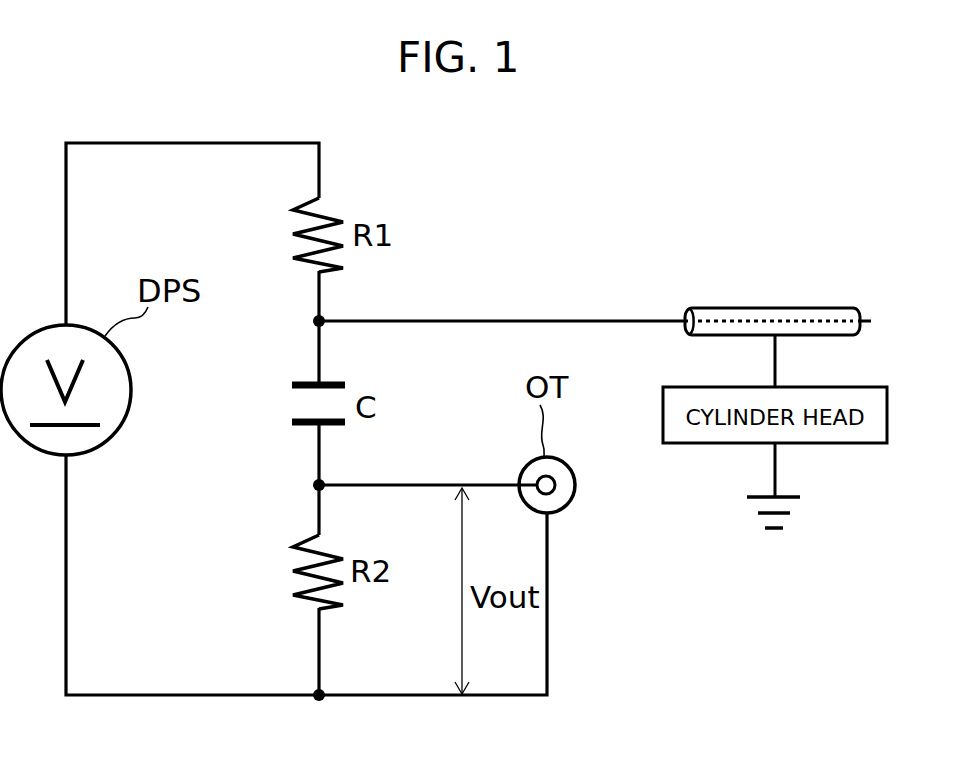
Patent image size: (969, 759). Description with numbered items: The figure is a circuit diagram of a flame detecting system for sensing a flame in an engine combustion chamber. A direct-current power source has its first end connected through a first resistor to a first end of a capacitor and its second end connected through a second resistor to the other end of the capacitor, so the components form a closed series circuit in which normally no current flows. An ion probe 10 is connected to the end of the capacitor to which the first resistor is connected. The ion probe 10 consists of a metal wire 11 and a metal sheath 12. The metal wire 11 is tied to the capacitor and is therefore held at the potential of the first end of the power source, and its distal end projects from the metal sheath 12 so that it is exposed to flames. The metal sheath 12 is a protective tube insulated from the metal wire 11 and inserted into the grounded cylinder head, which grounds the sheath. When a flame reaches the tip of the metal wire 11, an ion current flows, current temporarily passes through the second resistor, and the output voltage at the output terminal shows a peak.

The ion probe 10 is at (805, 258).
The metal wire 11 is at (872, 321).
The metal sheath 12 is at (825, 308).